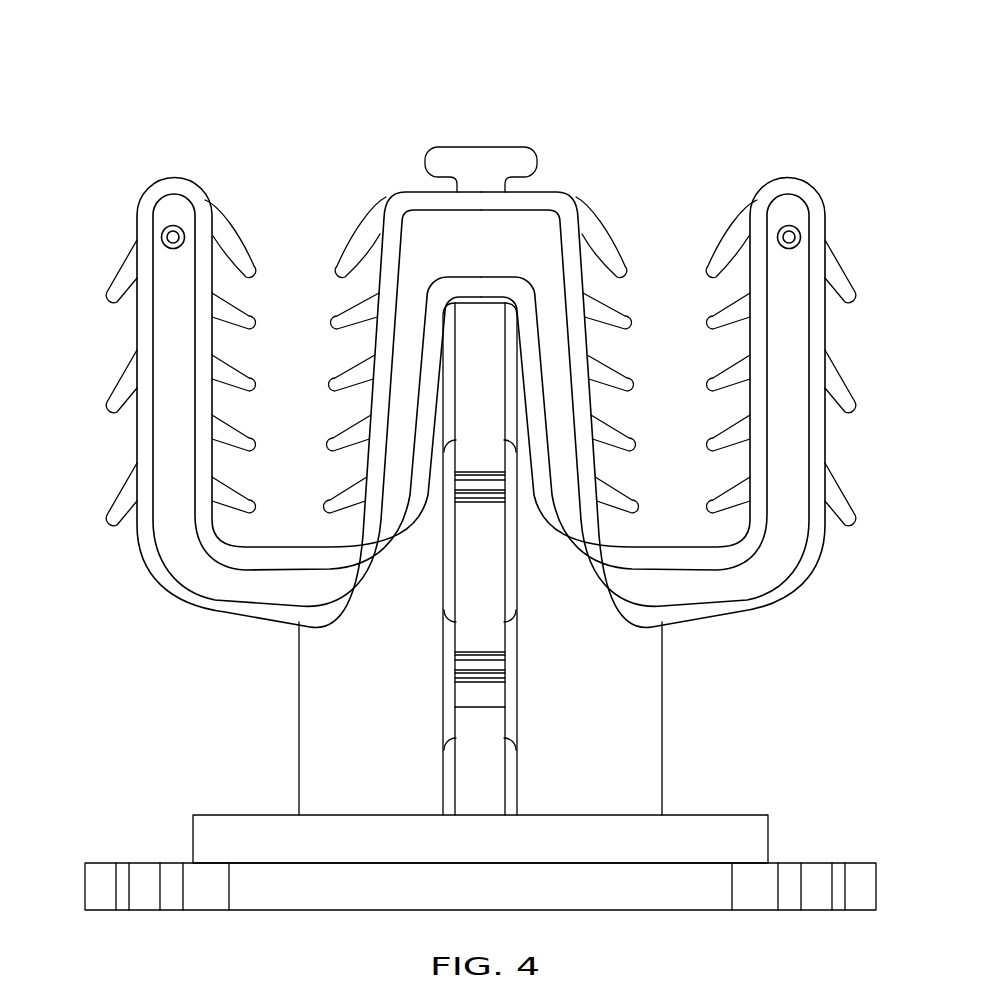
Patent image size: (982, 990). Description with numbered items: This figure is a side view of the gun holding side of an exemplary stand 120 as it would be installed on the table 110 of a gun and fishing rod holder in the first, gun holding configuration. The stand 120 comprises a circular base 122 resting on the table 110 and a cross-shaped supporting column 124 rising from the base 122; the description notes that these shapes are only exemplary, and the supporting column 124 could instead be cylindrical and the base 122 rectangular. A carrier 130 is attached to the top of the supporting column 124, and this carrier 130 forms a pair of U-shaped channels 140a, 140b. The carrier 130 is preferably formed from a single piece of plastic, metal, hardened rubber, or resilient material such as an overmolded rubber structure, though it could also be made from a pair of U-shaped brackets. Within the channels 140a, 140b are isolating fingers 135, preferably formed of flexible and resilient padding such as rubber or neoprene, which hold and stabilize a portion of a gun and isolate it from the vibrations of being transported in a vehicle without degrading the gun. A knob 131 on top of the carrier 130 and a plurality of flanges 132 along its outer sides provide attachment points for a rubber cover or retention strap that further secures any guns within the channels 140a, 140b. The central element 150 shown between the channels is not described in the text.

The table 110 is at (150, 898).
The stand 120 is at (141, 72).
The base 122 is at (222, 826).
The supporting column 124 is at (652, 770).
The carrier 130 is at (212, 645).
The knob 131 is at (480, 122).
The flanges 132 is at (97, 243).
The isolating fingers 135 is at (706, 530).
The U-shaped channel 140a is at (413, 172).
The U-shaped channel 140b is at (784, 172).
The threaded rod 150 is at (497, 700).